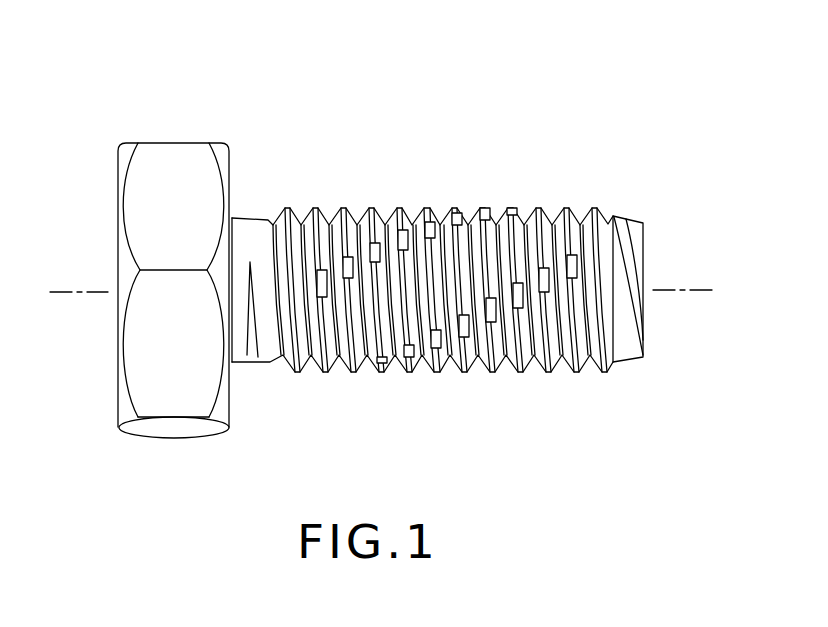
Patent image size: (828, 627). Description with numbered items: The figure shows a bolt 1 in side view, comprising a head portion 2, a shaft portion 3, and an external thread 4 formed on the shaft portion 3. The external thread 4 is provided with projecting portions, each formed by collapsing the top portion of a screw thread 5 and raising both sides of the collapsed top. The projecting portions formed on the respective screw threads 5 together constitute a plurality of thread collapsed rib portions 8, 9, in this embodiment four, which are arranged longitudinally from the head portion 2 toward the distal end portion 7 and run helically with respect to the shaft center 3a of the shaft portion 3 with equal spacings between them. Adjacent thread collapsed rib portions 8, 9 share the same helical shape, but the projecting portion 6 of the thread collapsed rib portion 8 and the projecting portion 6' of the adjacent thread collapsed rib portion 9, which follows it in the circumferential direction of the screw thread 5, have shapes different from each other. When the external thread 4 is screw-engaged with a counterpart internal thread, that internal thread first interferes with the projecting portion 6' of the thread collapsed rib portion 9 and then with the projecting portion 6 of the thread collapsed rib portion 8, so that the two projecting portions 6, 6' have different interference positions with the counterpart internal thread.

The bolt 1 is at (275, 106).
The head portion 2 is at (175, 143).
The shaft portion 3 is at (256, 213).
The shaft center 3a is at (685, 290).
The external thread 4 is at (306, 213).
The screw thread 5 is at (313, 213).
The projecting portion 6 is at (417, 220).
The projecting portion 6' is at (477, 347).
The distal end portion 7 is at (644, 247).
The thread collapsed rib portion 8 is at (449, 221).
The thread collapsed rib portion 9 is at (443, 343).